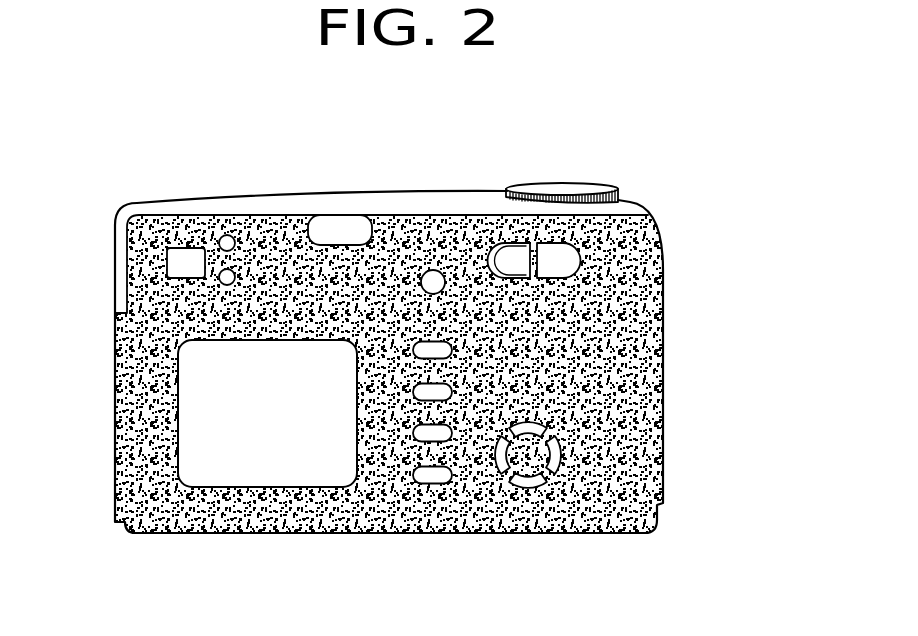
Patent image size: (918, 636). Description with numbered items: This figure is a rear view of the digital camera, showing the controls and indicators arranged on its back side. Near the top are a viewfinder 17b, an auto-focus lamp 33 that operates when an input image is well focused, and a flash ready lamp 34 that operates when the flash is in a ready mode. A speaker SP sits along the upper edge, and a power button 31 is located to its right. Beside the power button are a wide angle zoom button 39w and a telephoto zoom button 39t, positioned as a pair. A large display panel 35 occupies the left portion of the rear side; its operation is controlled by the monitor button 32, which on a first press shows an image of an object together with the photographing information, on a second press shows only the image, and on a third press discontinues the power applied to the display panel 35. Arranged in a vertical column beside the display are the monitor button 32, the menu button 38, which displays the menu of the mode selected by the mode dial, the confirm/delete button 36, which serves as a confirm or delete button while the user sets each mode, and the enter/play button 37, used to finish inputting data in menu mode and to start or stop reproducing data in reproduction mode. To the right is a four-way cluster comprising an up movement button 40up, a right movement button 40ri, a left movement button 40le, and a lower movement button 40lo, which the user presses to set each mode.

The viewfinder 17b is at (182, 258).
The auto-focus lamp 33 is at (226, 238).
The flash ready lamp 34 is at (222, 282).
The speaker SP is at (341, 228).
The power button 31 is at (433, 272).
The wide angle zoom button 39w is at (507, 257).
The telephoto zoom button 39t is at (560, 257).
The monitor button 32 is at (452, 350).
The menu button 38 is at (452, 392).
The confirm/delete button 36 is at (412, 445).
The enter/play button 37 is at (432, 483).
The display panel 35 is at (267, 468).
The up movement button 40up is at (557, 432).
The right movement button 40ri is at (562, 453).
The left movement button 40le is at (500, 474).
The down direction key 40lo is at (534, 488).